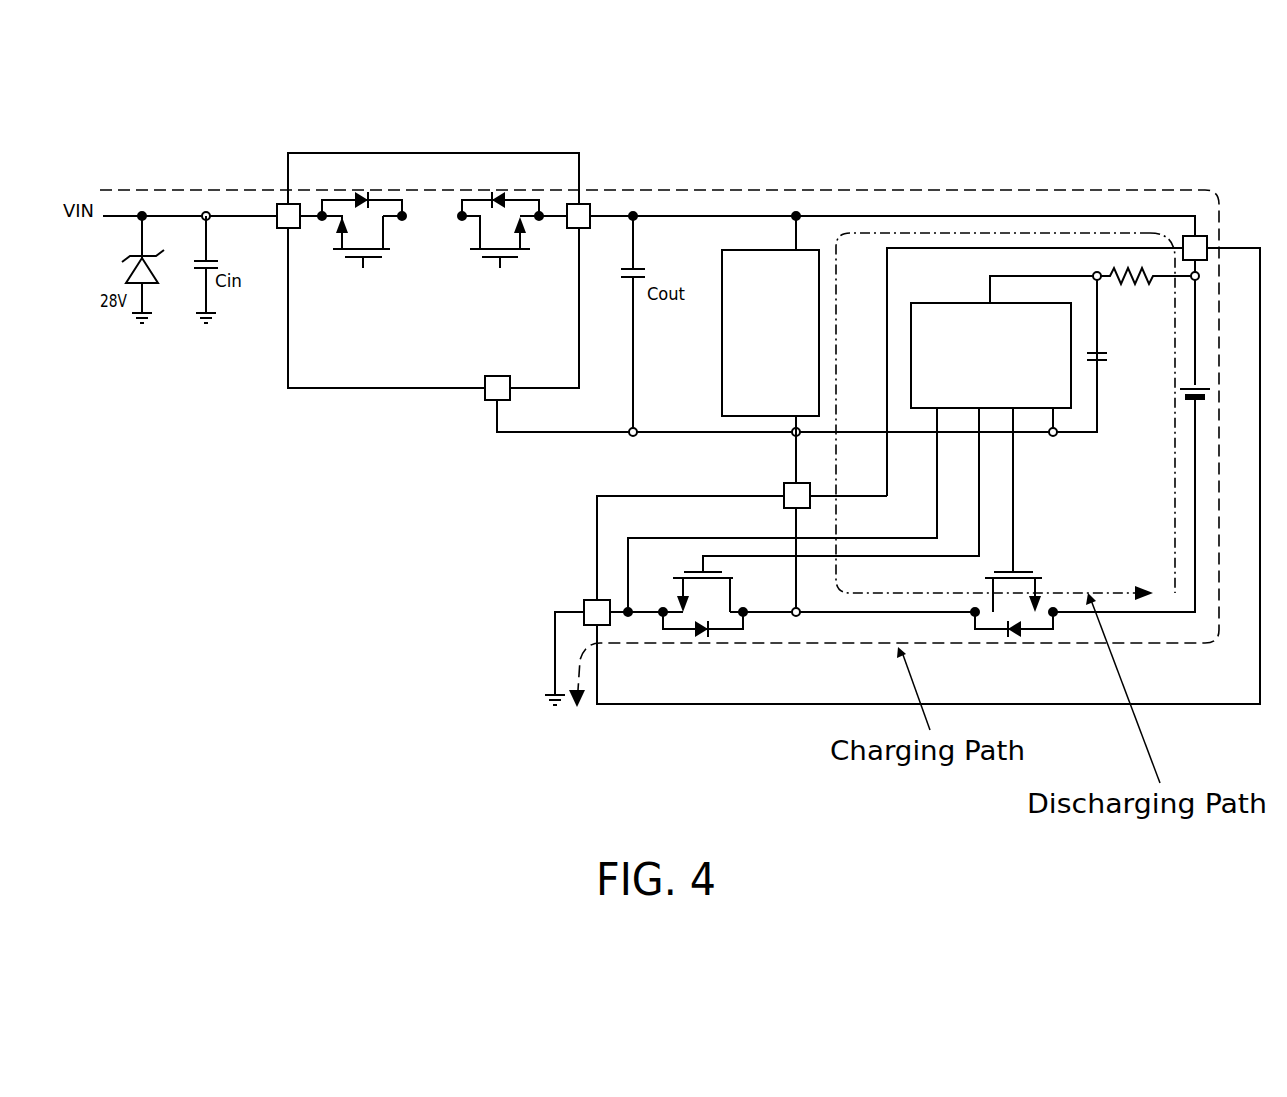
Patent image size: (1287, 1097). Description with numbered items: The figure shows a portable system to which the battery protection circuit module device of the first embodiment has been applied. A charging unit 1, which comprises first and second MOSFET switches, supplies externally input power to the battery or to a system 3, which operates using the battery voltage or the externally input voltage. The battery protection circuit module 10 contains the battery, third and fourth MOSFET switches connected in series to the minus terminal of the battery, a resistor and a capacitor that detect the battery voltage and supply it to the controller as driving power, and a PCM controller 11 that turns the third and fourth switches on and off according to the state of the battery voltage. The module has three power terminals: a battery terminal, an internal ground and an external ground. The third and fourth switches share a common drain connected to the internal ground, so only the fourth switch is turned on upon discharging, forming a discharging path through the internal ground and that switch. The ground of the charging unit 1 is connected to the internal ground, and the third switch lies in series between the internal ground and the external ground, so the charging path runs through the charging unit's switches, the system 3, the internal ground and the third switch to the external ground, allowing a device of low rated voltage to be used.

The charging unit 1 is at (433, 168).
The system 3 is at (745, 260).
The battery protection circuit module 10 is at (605, 533).
The PCM controller 11 is at (940, 315).